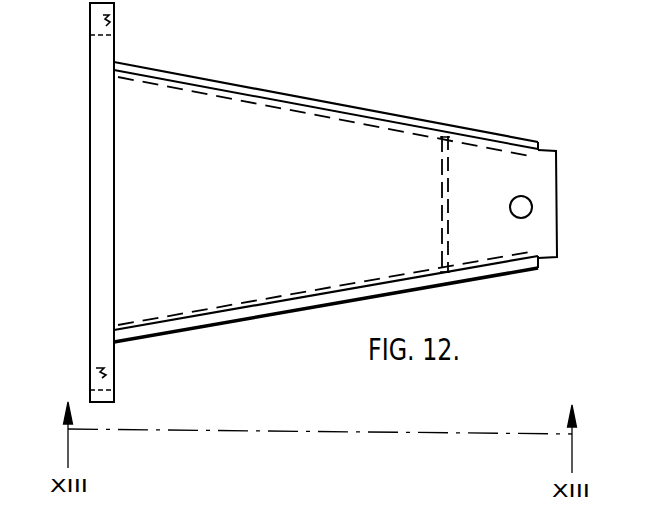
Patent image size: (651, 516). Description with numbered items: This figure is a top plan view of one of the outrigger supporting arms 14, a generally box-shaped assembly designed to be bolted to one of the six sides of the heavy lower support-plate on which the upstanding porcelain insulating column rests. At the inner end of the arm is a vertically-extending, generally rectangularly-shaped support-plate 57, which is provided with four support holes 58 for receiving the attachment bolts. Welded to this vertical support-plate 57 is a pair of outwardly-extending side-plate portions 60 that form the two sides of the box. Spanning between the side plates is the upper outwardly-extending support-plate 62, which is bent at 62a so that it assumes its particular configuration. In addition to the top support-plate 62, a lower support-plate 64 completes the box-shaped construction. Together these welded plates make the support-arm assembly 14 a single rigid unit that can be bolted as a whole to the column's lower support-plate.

The outrigger supporting arm 14 is at (283, 93).
The vertically-extending support-plate 57 is at (90, 180).
The support holes 58 is at (116, 22).
The side-plate portions 60 is at (192, 77).
The upper outwardly-extending support-plate 62 is at (213, 282).
The bend 62a is at (442, 207).
The lower support-plate 64 is at (392, 155).